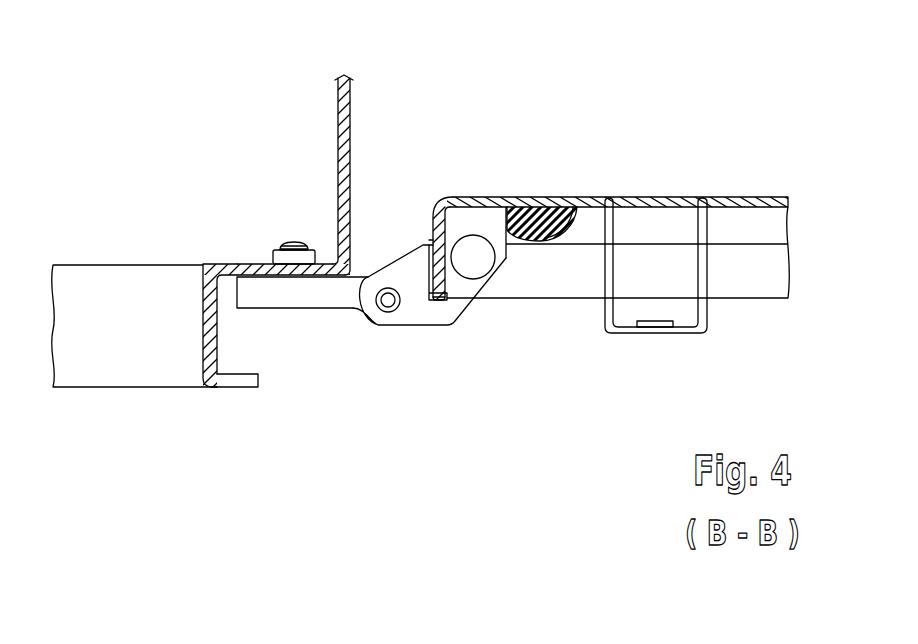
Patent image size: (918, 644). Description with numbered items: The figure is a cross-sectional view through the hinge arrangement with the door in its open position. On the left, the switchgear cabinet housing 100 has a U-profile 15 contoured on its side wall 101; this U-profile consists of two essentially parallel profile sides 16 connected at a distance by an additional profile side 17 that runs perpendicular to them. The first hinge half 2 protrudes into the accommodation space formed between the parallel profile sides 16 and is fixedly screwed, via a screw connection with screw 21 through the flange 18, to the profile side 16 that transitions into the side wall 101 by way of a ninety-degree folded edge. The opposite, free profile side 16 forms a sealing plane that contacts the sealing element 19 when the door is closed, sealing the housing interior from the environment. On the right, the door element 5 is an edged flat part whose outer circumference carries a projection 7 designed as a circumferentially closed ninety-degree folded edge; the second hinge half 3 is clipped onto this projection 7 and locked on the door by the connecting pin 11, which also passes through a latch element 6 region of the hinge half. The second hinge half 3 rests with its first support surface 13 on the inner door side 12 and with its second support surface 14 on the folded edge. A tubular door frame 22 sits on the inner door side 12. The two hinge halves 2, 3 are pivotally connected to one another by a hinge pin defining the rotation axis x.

The switchgear cabinet housing 100 is at (125, 167).
The side wall 101 is at (337, 96).
The door element 5 is at (704, 166).
The inner door side 12 is at (766, 211).
The first support surface 13 is at (624, 266).
The second support surface 14 is at (440, 213).
The projection 7 is at (437, 302).
The latch element 6 is at (433, 240).
The connecting pin 11 is at (478, 260).
The sealing element 19 is at (548, 228).
The tubular door frame 22 is at (657, 328).
The screw 21 is at (287, 241).
The first hinge half 2 is at (305, 290).
The second hinge half 3 is at (429, 319).
The rotation axis x is at (388, 303).
The flange 18 is at (342, 277).
The additional profile side 17 is at (205, 298).
The profile sides 16 is at (236, 272).
The U-profile 15 is at (191, 327).